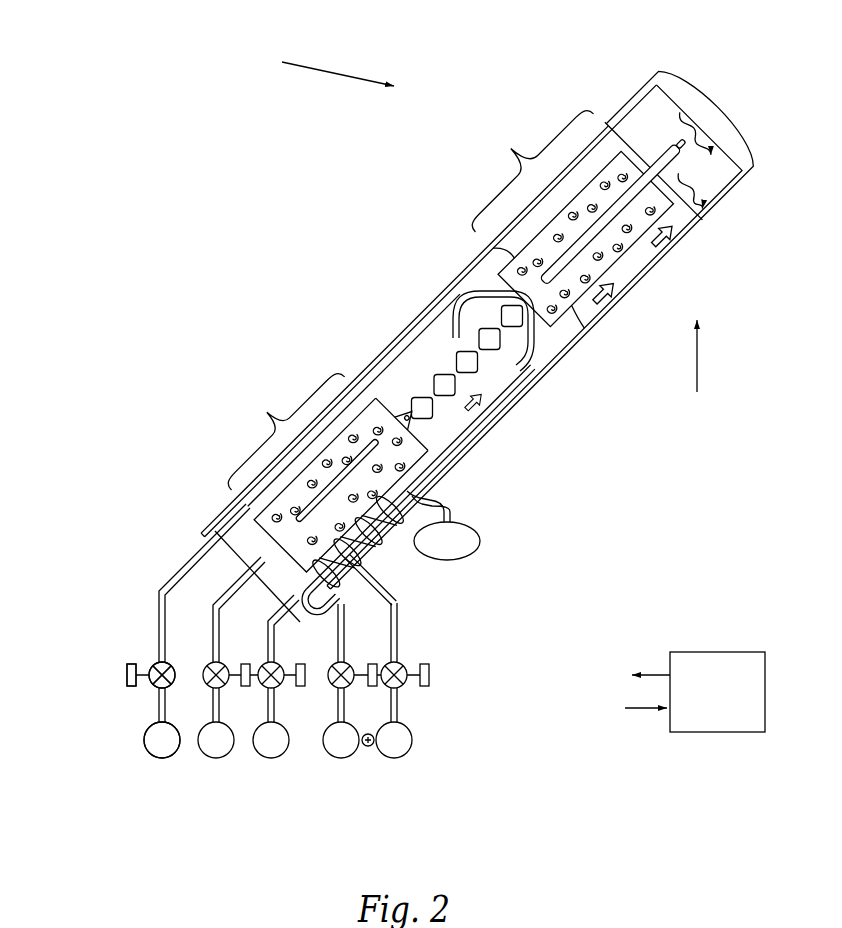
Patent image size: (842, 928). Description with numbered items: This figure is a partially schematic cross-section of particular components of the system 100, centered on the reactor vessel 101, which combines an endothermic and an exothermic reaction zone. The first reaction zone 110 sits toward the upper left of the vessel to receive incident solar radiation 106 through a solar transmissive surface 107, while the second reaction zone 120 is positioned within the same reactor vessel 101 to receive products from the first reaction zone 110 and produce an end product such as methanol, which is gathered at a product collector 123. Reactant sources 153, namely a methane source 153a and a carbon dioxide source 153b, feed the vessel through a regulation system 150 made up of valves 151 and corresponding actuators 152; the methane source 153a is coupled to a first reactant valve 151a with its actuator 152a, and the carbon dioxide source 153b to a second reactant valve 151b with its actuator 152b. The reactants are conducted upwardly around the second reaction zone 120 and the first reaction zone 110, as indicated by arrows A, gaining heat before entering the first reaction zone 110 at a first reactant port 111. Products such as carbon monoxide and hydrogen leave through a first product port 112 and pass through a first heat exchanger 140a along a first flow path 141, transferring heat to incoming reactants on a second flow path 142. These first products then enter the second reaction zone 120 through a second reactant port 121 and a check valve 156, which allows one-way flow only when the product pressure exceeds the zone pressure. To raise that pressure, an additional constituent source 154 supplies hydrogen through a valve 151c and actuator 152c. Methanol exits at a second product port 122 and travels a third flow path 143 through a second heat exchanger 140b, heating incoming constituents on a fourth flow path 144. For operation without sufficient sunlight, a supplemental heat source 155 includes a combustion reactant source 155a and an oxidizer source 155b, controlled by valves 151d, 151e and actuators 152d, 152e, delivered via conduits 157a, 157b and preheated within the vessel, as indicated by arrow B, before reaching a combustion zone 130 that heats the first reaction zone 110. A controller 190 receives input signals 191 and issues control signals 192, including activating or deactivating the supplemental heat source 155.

The system 100 is at (158, 105).
The incident solar radiation 106 is at (343, 74).
The solar transmissive surface 107 is at (602, 120).
The first reaction zone 110 is at (455, 335).
The combustion zone 130 is at (667, 109).
The arrow B is at (700, 130).
The arrows A is at (698, 194).
The first reactant port 111 is at (672, 184).
The first product port 112 is at (497, 288).
The first heat exchanger 140a is at (450, 334).
The conduit 157b is at (447, 348).
The first flow path 141 is at (497, 348).
The second flow path 142 is at (478, 412).
The second reaction zone 120 is at (317, 461).
The second reactant port 121 is at (397, 404).
The check valve 156 is at (402, 413).
The second heat exchanger 140b is at (325, 520).
The second product port 122 is at (293, 570).
The reactor vessel 101 is at (206, 538).
The conduit 157a is at (468, 443).
The third flow path 143 is at (402, 477).
The fourth flow path 144 is at (383, 562).
The product collector 123 is at (478, 553).
The regulation system 150 is at (506, 640).
The valves 151 is at (126, 694).
The first reactant valve 151a is at (342, 660).
The second reactant valve 151b is at (397, 660).
The valve 151c is at (207, 663).
The valve 151d is at (276, 690).
The valve 151e is at (155, 664).
The actuators 152 is at (118, 668).
The actuator 152a is at (378, 686).
The actuator 152b is at (430, 672).
The actuator 152c is at (246, 690).
The actuator 152d is at (300, 664).
The actuator 152e is at (126, 682).
The reactant sources 153 is at (373, 803).
The methane source 153a is at (355, 753).
The carbon dioxide source 153b is at (408, 753).
The additional constituent source 154 is at (209, 770).
The supplemental heat source 155 is at (114, 652).
The combustion reactant source 155a is at (268, 762).
The oxidizer source 155b is at (144, 742).
The controller 190 is at (715, 735).
The input signals 191 is at (640, 712).
The control signals 192 is at (648, 673).